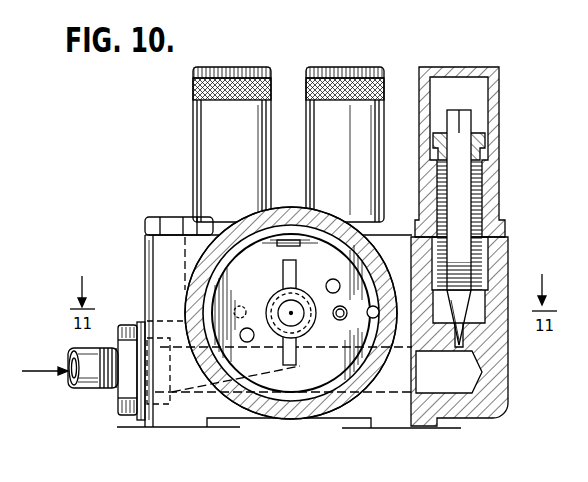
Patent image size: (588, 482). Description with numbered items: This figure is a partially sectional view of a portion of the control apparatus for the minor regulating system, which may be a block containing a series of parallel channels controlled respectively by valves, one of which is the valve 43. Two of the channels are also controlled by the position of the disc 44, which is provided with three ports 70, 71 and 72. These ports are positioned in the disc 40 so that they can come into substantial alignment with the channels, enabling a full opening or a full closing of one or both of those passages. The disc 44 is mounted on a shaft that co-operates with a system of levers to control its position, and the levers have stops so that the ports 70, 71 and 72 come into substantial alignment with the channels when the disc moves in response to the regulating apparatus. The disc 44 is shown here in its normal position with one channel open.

The disc 40 is at (93, 386).
The valve 43 is at (463, 311).
The disc 44 is at (301, 374).
The port 70 is at (345, 320).
The port 71 is at (337, 284).
The port 72 is at (244, 333).